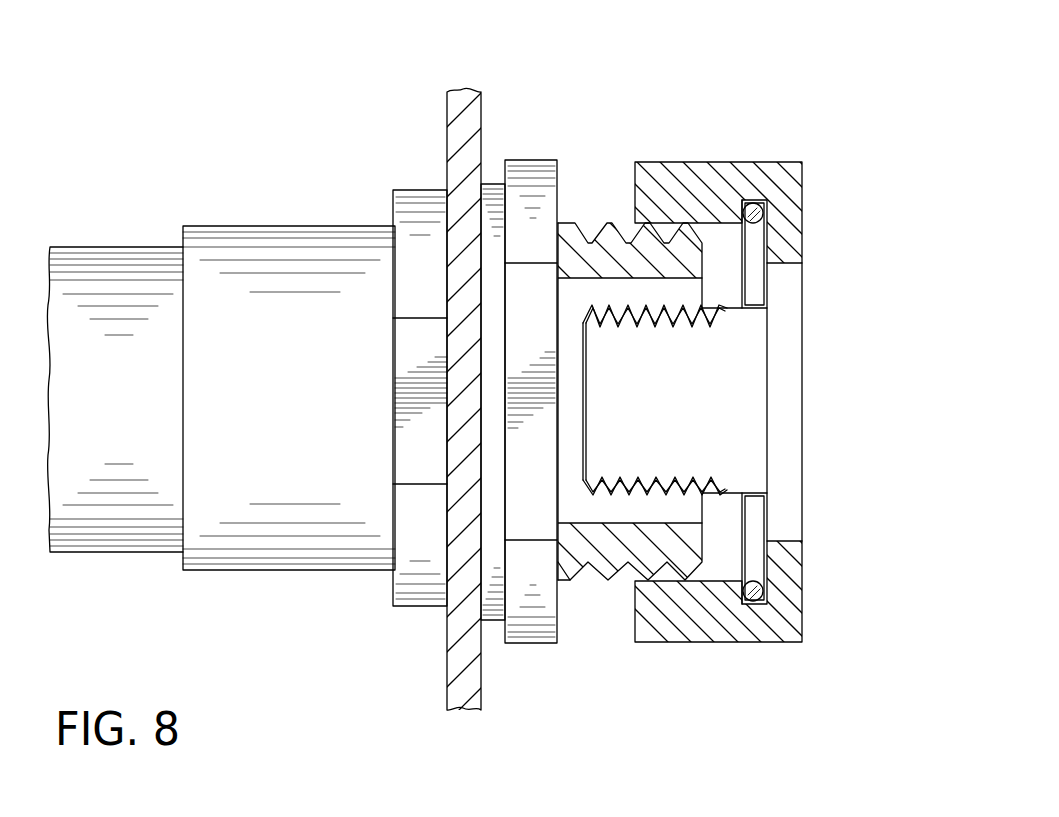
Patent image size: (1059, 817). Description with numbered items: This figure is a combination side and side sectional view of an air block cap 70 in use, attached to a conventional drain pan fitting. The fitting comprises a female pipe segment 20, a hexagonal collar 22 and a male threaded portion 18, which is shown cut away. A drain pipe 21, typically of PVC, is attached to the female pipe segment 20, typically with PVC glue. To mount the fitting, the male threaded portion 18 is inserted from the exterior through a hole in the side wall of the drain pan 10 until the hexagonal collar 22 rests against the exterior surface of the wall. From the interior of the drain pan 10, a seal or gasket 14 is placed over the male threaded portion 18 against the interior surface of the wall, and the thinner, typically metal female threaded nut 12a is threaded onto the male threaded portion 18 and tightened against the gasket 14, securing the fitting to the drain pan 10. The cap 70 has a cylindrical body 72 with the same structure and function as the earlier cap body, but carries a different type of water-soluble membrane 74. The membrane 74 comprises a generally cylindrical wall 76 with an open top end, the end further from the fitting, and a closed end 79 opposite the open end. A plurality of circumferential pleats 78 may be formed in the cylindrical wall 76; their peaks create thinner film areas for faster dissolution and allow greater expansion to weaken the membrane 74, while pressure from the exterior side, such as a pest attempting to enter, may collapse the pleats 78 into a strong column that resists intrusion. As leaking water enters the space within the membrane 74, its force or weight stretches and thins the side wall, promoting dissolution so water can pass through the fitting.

The drain pan 10 is at (454, 133).
The female threaded nut 12a is at (527, 643).
The seal or gasket 14 is at (493, 184).
The male threaded portion 18 is at (586, 224).
The female pipe segment 20 is at (306, 237).
The drain pipe 21 is at (143, 256).
The hexagonal collar 22 is at (394, 208).
The air block cap 70 is at (797, 140).
The cylindrical body 72 is at (713, 162).
The water-soluble membrane 74 is at (768, 290).
The cylindrical wall 76 is at (737, 492).
The circumferential pleats 78 is at (661, 328).
The closed end 79 is at (587, 443).